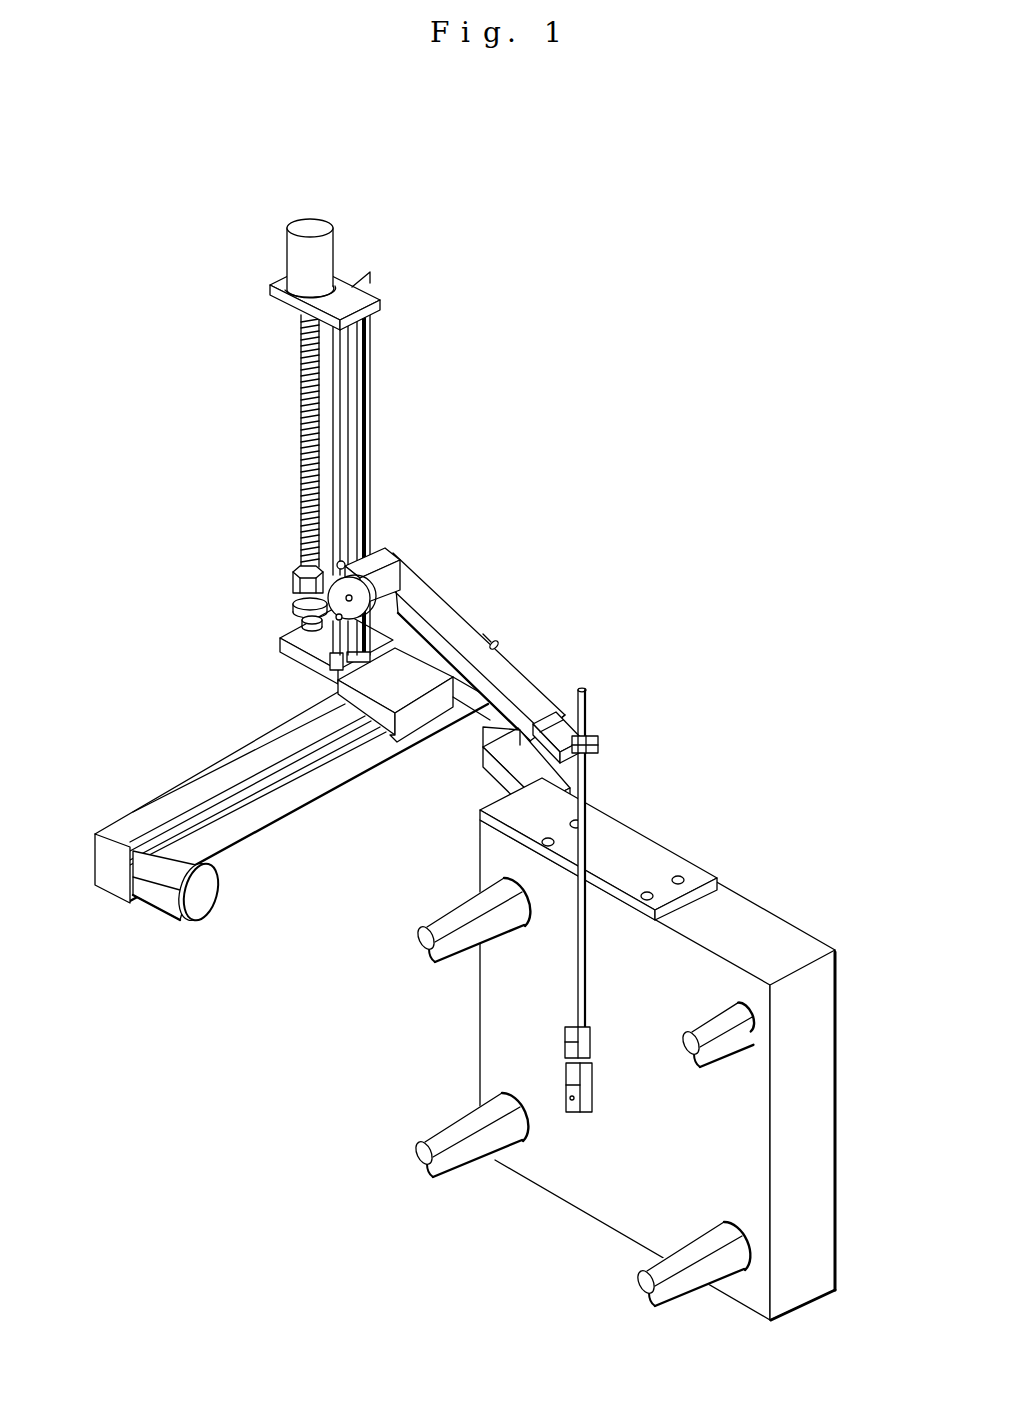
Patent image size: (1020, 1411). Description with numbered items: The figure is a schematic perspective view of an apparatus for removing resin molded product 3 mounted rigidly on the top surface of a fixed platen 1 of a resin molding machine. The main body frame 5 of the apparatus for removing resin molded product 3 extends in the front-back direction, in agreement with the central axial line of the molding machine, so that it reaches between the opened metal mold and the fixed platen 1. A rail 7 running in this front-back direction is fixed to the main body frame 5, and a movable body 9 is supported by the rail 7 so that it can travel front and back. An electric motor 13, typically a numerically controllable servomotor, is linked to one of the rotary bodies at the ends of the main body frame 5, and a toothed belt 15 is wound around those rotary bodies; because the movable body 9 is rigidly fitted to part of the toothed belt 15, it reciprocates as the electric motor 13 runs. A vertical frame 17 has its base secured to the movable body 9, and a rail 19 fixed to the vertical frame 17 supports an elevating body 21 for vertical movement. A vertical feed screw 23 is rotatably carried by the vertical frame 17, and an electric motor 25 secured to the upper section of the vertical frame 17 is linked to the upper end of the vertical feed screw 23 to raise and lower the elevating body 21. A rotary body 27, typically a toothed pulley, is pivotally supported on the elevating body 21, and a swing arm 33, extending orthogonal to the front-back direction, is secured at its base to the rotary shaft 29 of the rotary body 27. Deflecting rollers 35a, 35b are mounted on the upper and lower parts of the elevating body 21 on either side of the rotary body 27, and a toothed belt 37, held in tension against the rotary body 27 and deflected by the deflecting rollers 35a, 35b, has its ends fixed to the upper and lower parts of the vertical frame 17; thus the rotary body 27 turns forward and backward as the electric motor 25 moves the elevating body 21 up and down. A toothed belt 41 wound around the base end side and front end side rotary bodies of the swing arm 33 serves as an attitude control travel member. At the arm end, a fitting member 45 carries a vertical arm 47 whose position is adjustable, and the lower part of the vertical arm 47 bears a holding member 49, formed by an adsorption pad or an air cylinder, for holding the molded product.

The fixed platen 1 is at (583, 1143).
The apparatus for removing resin molded product 3 is at (562, 567).
The main body frame 5 is at (273, 812).
The rail 7 is at (306, 779).
The movable body 9 is at (383, 681).
The electric motor 13 is at (184, 924).
The toothed belt 15 is at (192, 811).
The vertical frame 17 is at (372, 405).
The rail 19 is at (372, 462).
The elevating body 21 is at (303, 590).
The vertical feed screw 23 is at (302, 455).
The electric motor 25 is at (313, 271).
The rotary body 27 is at (312, 606).
The rotary shaft 29 is at (312, 627).
The swing arm 33 is at (508, 683).
The deflecting roller 35a is at (344, 566).
The deflecting roller 35b is at (338, 619).
The toothed belt 37 is at (345, 355).
The toothed belt 41 is at (586, 754).
The fitting member 45 is at (600, 745).
The vertical arm 47 is at (577, 991).
The holding member 49 is at (572, 1081).